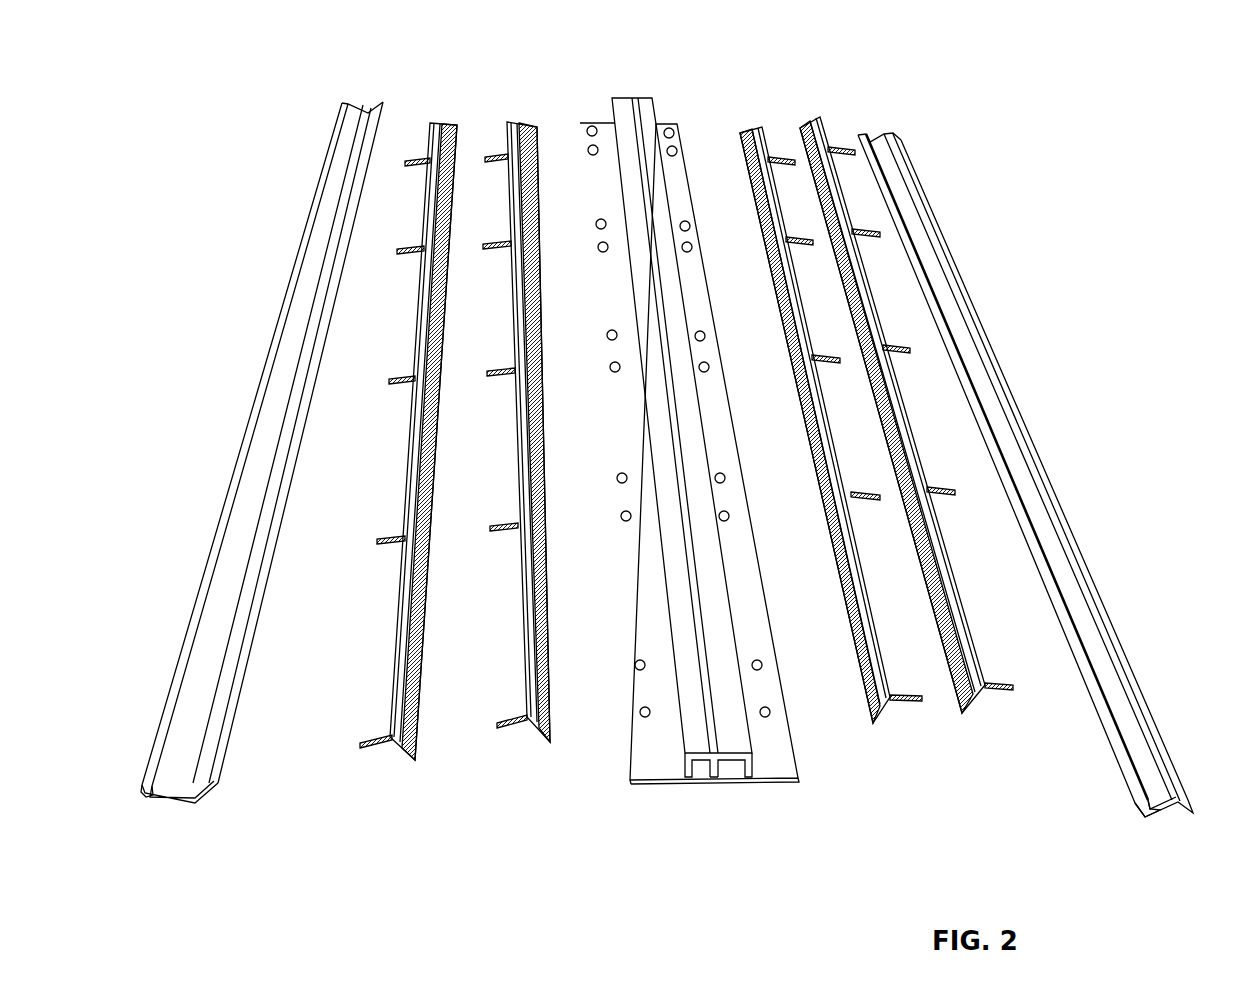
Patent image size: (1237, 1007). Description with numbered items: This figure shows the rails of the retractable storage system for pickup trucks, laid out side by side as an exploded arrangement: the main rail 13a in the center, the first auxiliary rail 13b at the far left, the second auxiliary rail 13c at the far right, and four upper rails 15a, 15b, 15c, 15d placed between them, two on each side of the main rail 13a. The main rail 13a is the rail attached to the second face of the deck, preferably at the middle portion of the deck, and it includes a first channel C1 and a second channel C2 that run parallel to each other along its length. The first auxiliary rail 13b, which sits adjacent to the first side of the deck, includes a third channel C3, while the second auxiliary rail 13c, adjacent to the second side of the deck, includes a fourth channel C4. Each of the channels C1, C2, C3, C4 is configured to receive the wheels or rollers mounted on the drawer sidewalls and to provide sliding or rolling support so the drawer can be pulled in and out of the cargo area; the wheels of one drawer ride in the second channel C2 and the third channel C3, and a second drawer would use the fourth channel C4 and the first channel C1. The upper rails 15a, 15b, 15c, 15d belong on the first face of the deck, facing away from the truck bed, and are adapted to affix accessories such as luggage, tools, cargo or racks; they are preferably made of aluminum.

The main rail 13a is at (572, 82).
The first auxiliary rail 13b is at (283, 392).
The second auxiliary rail 13c is at (1032, 435).
The upper rail 15a is at (400, 693).
The upper rail 15b is at (530, 692).
The upper rail 15c is at (888, 695).
The upper rail 15d is at (973, 675).
The first channel C1 is at (700, 752).
The second channel C2 is at (733, 755).
The third channel C3 is at (150, 797).
The fourth channel C4 is at (1148, 802).